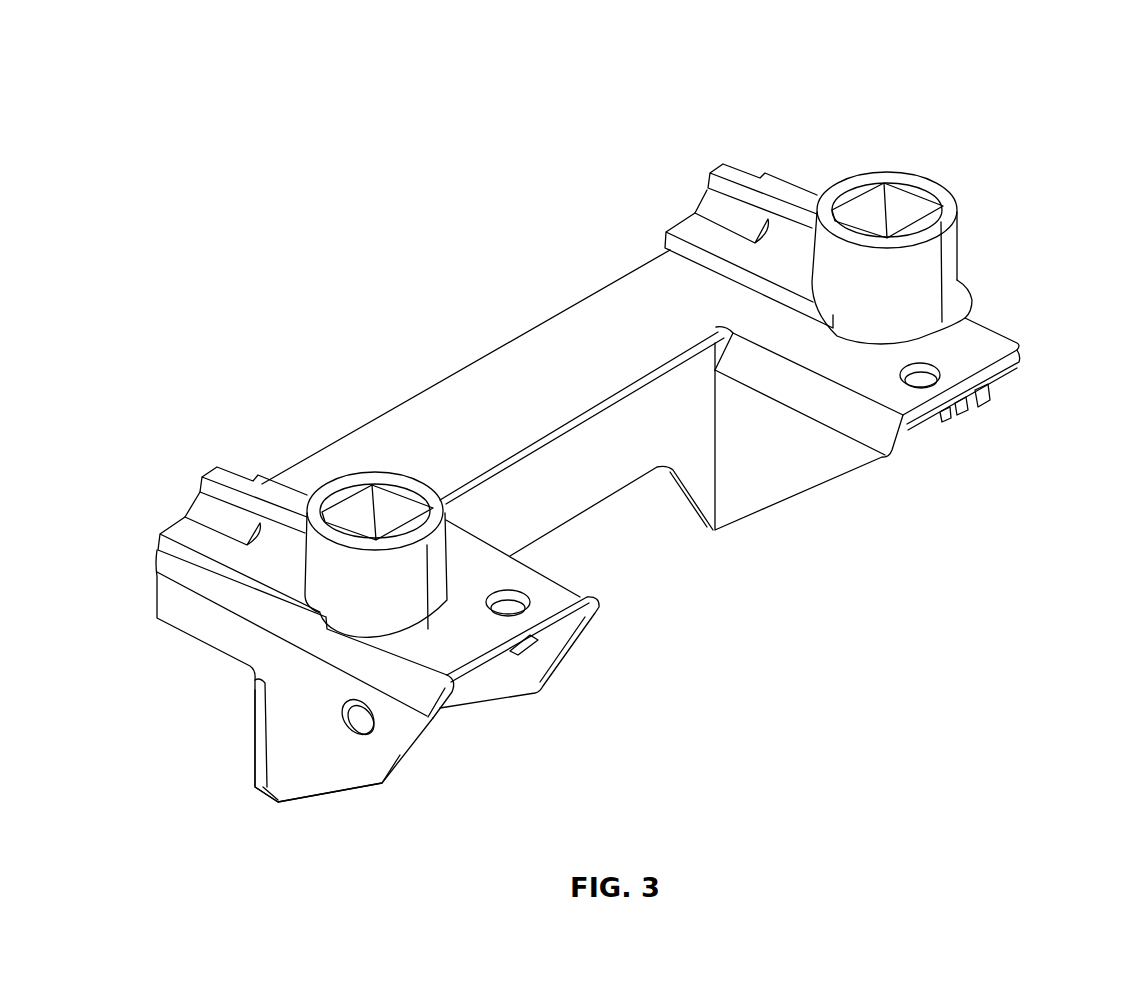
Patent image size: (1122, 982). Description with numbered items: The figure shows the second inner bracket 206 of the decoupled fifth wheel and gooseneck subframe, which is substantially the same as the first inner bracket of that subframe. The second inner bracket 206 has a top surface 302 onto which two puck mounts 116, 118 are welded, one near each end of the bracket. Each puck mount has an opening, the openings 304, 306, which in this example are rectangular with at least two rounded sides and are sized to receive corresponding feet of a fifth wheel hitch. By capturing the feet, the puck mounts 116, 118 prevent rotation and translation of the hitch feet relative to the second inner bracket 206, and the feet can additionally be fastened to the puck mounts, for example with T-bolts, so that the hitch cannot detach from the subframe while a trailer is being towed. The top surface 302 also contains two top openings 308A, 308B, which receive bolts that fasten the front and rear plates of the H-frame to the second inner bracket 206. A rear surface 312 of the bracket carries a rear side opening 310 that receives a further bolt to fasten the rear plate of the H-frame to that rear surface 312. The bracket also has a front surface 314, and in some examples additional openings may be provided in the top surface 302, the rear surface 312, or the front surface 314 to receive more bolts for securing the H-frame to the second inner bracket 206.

The second inner bracket 206 is at (246, 166).
The top surface 302 is at (513, 378).
The puck mount 116 is at (338, 480).
The puck mount 118 is at (847, 177).
The opening 304 is at (368, 487).
The opening 306 is at (880, 183).
The top opening 308A is at (530, 610).
The top opening 308B is at (930, 386).
The rear side opening 310 is at (365, 728).
The rear surface 312 is at (288, 727).
The front surface 314 is at (1003, 318).